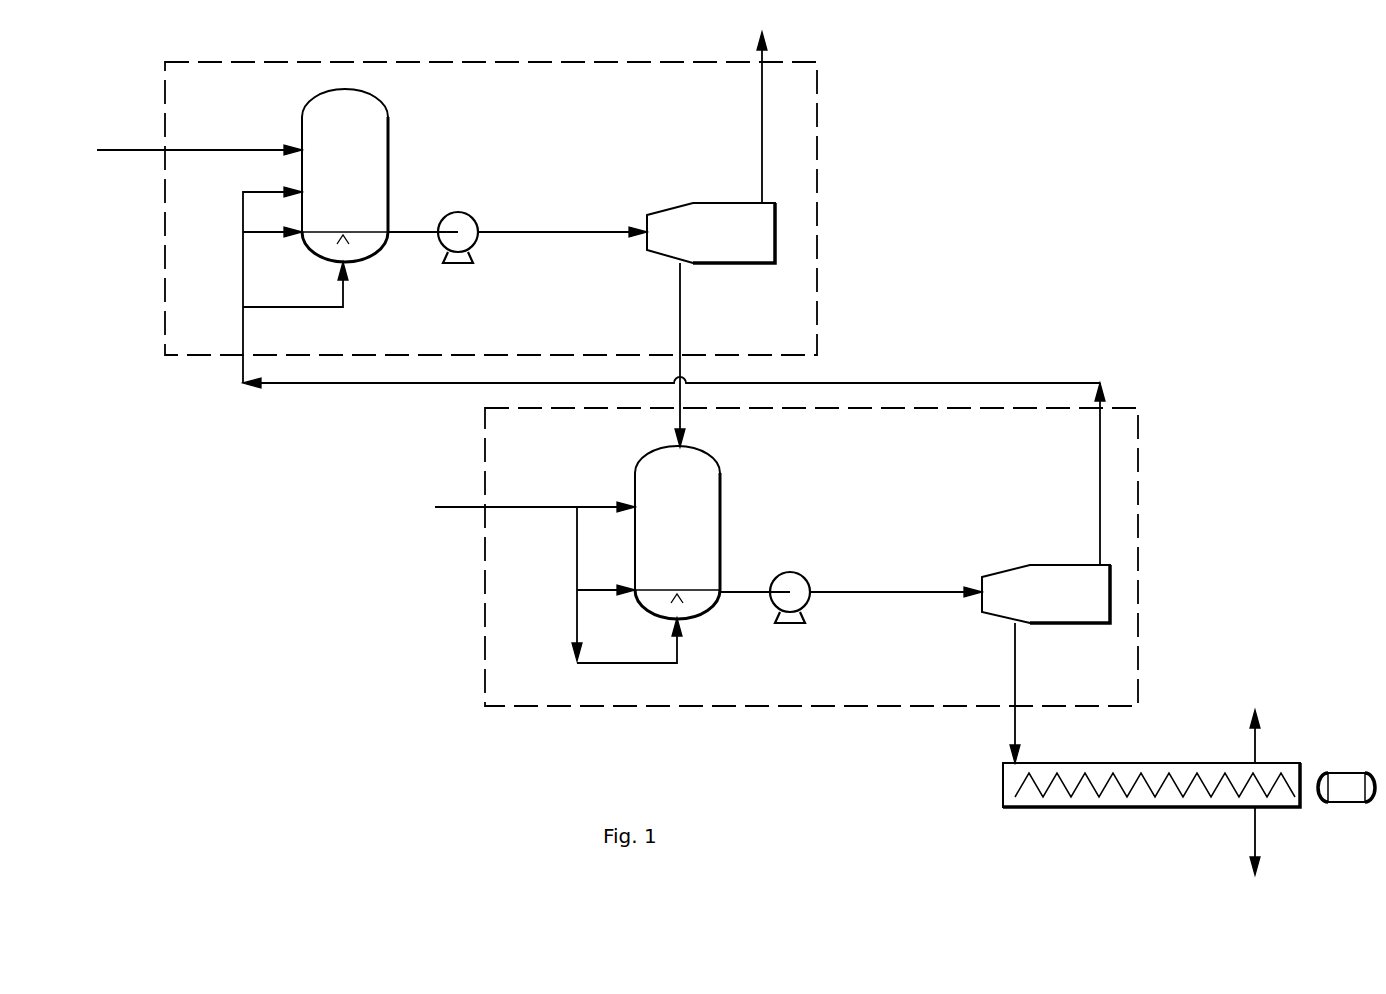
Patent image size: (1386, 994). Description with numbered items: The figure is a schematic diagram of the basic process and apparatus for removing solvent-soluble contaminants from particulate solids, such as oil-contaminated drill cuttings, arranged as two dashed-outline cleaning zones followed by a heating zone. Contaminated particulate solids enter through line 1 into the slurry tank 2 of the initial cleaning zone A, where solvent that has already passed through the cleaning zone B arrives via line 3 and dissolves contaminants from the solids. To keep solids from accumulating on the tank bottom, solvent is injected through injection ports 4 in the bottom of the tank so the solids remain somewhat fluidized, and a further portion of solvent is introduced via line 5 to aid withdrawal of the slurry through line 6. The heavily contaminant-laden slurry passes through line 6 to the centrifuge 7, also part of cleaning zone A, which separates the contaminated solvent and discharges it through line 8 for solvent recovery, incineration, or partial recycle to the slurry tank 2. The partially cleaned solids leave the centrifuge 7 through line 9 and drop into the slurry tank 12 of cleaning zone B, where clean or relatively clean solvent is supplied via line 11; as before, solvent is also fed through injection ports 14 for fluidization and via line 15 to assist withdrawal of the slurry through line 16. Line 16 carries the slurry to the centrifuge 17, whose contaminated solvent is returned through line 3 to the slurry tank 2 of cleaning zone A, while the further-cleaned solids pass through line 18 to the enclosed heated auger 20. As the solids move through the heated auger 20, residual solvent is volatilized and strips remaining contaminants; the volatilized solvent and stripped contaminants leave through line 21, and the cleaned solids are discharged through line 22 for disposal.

The line 1 is at (257, 150).
The slurry tank 2 is at (390, 135).
The line 3 is at (242, 365).
The injection ports 4 is at (345, 263).
The line 5 is at (267, 232).
The line 6 is at (525, 232).
The centrifuge 7 is at (670, 217).
The line 8 is at (762, 150).
The line 9 is at (680, 327).
The line 11 is at (557, 507).
The slurry tank 12 is at (720, 493).
The injection ports 14 is at (678, 620).
The line 15 is at (593, 590).
The line 16 is at (858, 592).
The centrifuge 17 is at (1005, 570).
The line 18 is at (1015, 672).
The enclosed heated auger 20 is at (1137, 763).
The line 21 is at (1257, 752).
The line 22 is at (1253, 823).
The initial cleaning zone A is at (818, 172).
The cleaning zone B is at (1140, 462).